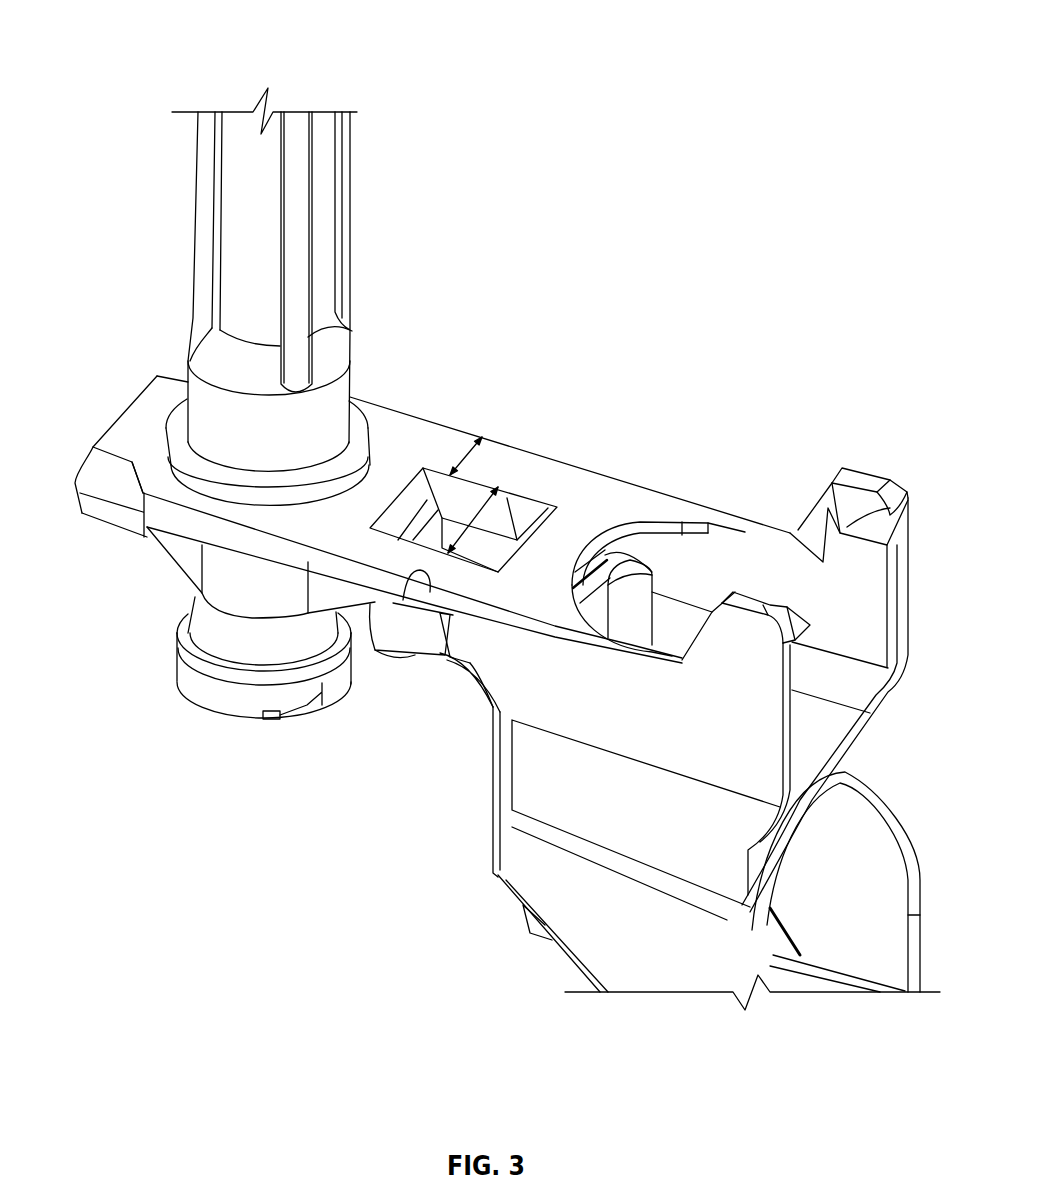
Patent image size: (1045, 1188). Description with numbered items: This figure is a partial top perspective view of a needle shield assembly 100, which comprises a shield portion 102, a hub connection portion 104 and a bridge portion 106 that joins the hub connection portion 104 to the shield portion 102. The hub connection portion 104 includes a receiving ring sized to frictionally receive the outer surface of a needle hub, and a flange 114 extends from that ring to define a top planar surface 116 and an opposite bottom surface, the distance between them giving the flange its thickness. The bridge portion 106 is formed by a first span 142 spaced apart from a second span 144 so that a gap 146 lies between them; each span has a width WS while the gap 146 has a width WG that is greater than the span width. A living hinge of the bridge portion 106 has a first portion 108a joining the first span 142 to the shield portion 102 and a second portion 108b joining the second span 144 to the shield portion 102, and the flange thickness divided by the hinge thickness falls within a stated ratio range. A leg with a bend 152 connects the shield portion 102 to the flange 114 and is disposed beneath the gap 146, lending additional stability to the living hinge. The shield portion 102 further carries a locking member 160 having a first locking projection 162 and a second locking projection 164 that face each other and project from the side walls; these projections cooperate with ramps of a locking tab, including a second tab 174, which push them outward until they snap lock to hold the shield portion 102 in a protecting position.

The needle shield assembly 100 is at (222, 46).
The shield portion 102 is at (496, 903).
The hub connection portion 104 is at (160, 354).
The bridge portion 106 is at (563, 404).
The first portion of living hinge 108a is at (407, 602).
The second portion of living hinge 108b is at (483, 640).
The flange 114 is at (405, 398).
The top planar surface 116 is at (167, 487).
The first span 142 is at (545, 457).
The second span 144 is at (385, 563).
The gap 146 is at (507, 600).
The bend 152 is at (385, 640).
The locking member 160 is at (840, 673).
The first locking projection 162 is at (905, 503).
The second locking projection 164 is at (788, 607).
The second tab 174 is at (97, 473).